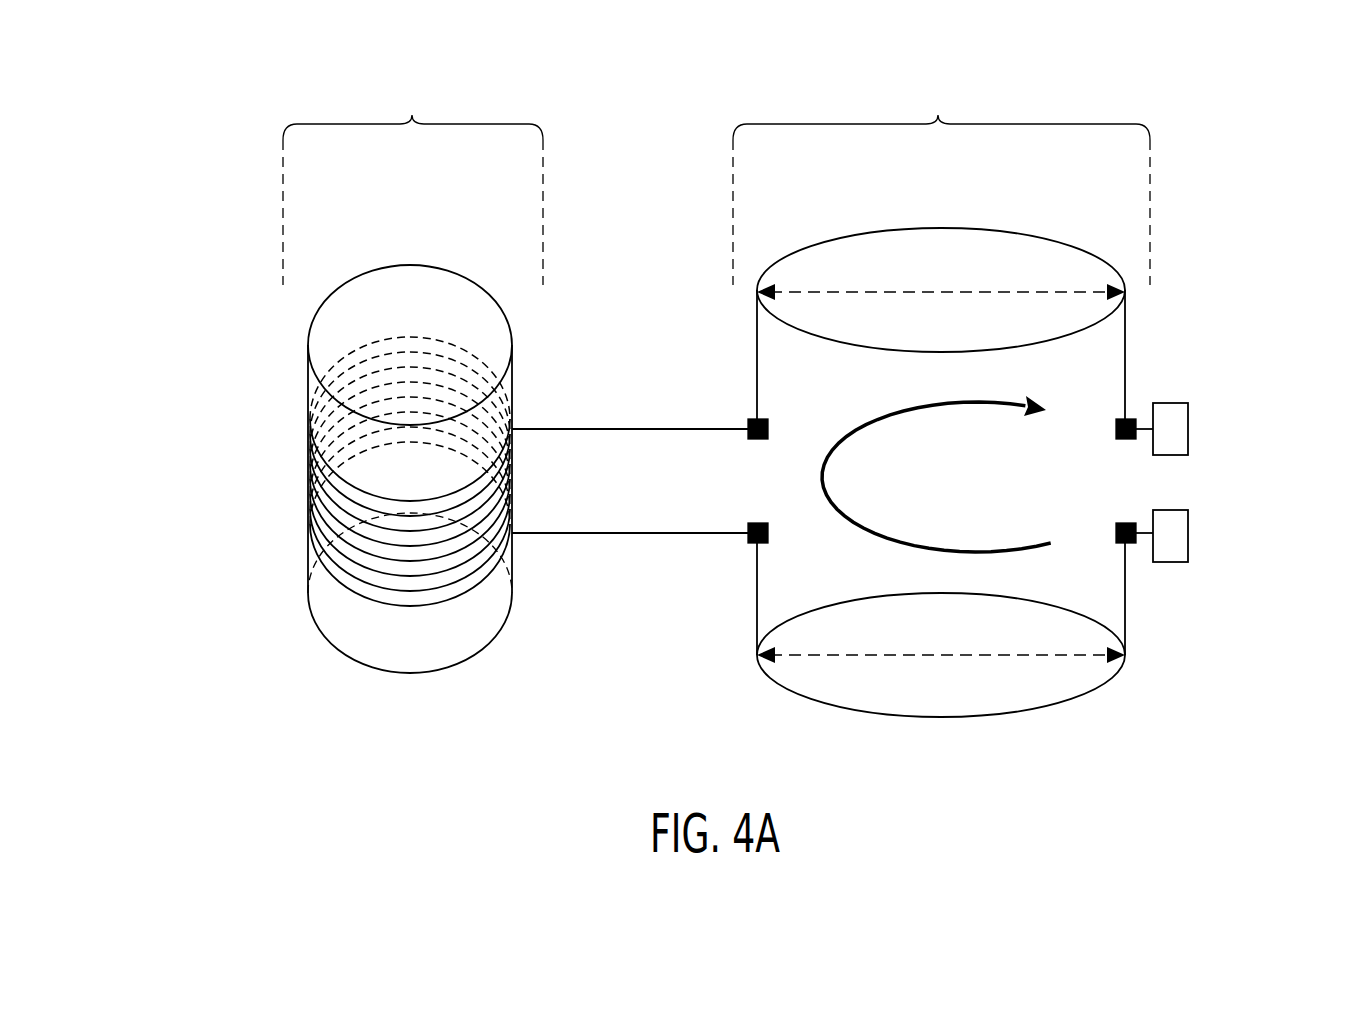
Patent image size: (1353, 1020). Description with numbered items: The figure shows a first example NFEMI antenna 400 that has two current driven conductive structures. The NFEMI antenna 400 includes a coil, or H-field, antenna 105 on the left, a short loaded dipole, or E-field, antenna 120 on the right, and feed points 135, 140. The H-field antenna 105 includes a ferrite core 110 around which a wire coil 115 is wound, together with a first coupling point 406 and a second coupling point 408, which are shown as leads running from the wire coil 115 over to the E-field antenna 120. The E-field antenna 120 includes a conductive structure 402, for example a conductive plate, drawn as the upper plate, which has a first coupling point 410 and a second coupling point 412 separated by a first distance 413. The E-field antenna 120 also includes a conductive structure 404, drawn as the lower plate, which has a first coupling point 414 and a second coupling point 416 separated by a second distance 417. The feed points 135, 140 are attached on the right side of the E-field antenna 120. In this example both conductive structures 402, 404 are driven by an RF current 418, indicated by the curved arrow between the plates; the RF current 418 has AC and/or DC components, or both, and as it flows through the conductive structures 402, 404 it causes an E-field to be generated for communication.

The NFEMI antenna 400 is at (146, 94).
The coil antenna 105 is at (362, 375).
The ferrite core 110 is at (431, 293).
The wire coil 115 is at (355, 598).
The short loaded dipole antenna 120 is at (1024, 425).
The conductive structure 402 is at (963, 228).
The conductive structure 404 is at (946, 718).
The first coupling point 406 is at (722, 428).
The second coupling point 408 is at (700, 535).
The first coupling point 410 is at (1128, 348).
The second coupling point 412 is at (757, 367).
The first distance 413 is at (852, 290).
The first coupling point 414 is at (1128, 595).
The second coupling point 416 is at (757, 585).
The second distance 417 is at (920, 655).
The RF current 418 is at (822, 471).
The feed point 135 is at (1189, 420).
The feed point 140 is at (1189, 552).